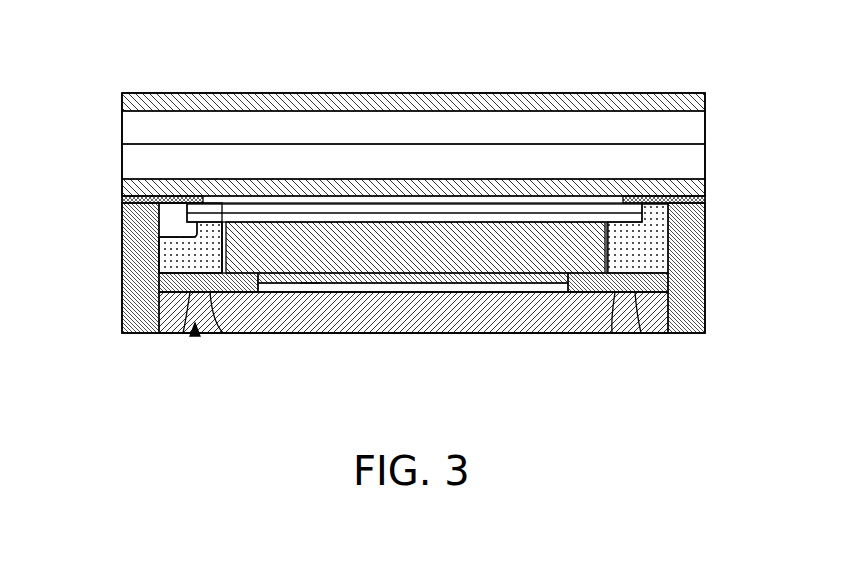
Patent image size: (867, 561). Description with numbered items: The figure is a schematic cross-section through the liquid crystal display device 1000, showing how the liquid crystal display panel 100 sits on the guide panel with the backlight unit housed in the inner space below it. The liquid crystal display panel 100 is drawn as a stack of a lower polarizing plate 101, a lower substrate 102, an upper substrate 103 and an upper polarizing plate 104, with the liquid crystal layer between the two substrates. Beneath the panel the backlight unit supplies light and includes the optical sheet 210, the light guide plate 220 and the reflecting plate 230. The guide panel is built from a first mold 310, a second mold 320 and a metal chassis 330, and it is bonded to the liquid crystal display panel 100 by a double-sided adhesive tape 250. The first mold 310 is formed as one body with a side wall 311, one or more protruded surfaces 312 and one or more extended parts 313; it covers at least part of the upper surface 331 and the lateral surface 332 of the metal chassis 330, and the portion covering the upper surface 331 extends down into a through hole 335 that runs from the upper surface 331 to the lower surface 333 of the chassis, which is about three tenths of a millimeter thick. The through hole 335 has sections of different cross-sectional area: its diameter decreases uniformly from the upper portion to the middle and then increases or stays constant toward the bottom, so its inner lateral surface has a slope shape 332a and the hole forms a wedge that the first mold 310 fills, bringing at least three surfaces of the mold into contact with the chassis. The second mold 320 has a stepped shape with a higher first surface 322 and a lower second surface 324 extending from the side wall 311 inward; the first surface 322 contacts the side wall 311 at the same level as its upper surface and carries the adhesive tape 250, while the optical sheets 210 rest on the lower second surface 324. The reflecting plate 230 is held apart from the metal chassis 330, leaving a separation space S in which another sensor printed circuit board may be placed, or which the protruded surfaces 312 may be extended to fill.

The liquid crystal display device 1000 is at (697, 23).
The liquid crystal display panel 100 is at (760, 95).
The lower polarizing plate 101 is at (687, 186).
The lower substrate 102 is at (687, 158).
The upper substrate 103 is at (687, 127).
The upper polarizing plate 104 is at (687, 100).
The optical sheet 210 is at (633, 218).
The light guide plate 220 is at (600, 232).
The reflecting plate 230 is at (541, 281).
The adhesive tape 250 is at (121, 204).
The first mold 310 is at (67, 255).
The side wall 311 is at (145, 278).
The protruded surface 312 is at (182, 277).
The extended part 313 is at (195, 307).
The second mold 320 is at (67, 208).
The first surface 322 is at (158, 222).
The second surface 324 is at (192, 241).
The metal chassis 330 is at (390, 318).
The upper surface 331 is at (477, 287).
The lateral surface 332 is at (666, 312).
The slope shape 332a is at (213, 318).
The lower surface 333 is at (436, 333).
The through hole 335 is at (194, 338).
The separation space S is at (303, 286).